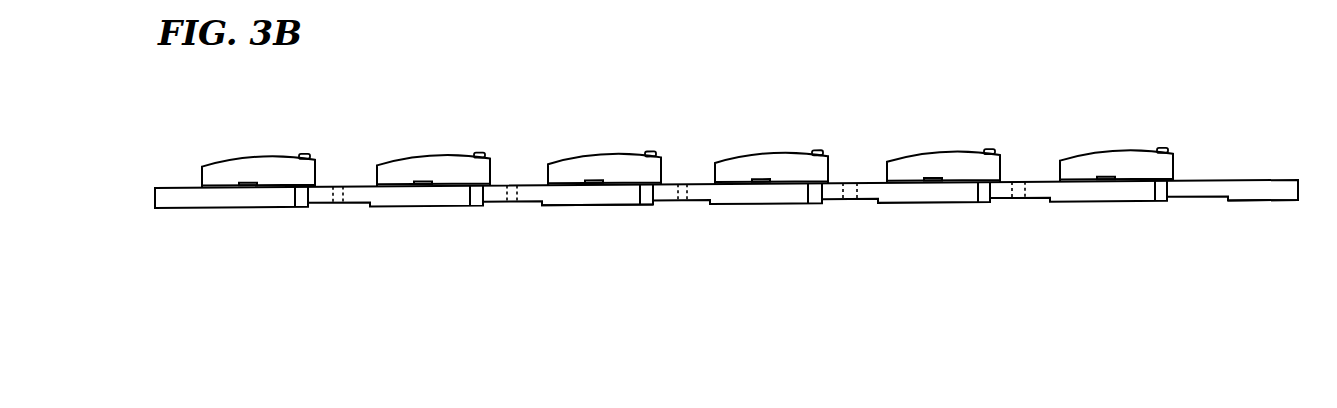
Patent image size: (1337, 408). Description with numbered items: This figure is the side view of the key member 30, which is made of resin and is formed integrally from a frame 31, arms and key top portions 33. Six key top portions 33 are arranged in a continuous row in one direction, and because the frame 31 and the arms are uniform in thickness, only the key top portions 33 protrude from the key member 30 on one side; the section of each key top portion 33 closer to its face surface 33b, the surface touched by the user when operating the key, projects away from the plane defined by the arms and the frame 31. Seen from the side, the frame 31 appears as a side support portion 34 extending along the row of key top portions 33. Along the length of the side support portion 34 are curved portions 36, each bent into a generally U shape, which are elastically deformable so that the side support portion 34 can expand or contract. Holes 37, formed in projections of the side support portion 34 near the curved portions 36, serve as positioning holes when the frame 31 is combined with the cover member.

The key member 30 is at (1233, 180).
The frame 31 is at (1273, 203).
The key top portion 33 is at (262, 168).
The face surface 33b is at (961, 153).
The side support portion 34 is at (575, 207).
The curved portion 36 is at (302, 208).
The hole 37 is at (338, 210).